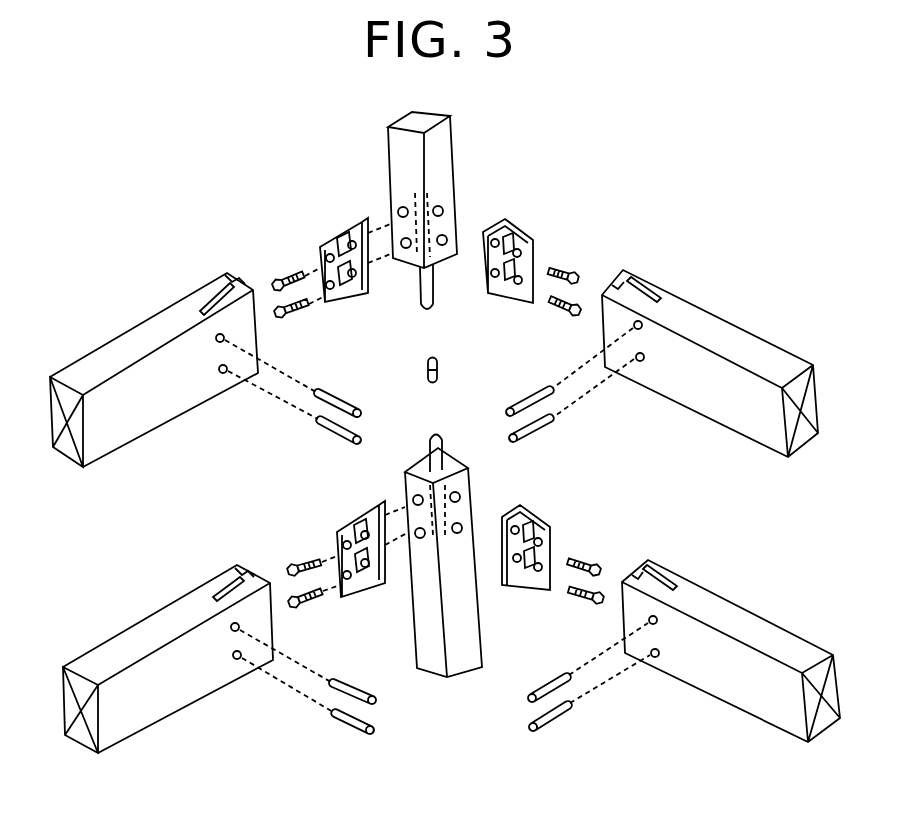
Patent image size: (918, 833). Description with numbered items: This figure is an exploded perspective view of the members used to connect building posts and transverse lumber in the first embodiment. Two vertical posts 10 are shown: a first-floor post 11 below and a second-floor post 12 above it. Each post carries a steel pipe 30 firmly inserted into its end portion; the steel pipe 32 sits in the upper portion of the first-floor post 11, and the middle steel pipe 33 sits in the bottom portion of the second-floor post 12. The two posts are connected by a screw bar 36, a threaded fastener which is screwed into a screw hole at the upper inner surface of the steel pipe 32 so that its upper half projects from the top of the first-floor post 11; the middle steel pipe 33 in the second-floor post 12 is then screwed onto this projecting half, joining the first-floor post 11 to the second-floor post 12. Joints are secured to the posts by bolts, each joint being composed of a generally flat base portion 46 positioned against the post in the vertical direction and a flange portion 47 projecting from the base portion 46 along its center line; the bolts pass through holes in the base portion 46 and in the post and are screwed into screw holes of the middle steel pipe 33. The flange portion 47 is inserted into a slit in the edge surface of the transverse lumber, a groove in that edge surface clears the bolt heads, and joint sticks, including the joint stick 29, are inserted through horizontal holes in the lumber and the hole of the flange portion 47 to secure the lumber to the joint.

The vertical post 10 is at (442, 155).
The first-floor post 11 is at (514, 610).
The second-floor post 12 is at (491, 175).
The joint stick 29 is at (382, 363).
The steel pipe 30 is at (437, 290).
The steel pipe 32 is at (447, 449).
The middle steel pipe 33 is at (501, 225).
The screw bar 36 is at (440, 370).
The base portion 46 is at (347, 222).
The flange portion 47 is at (318, 242).